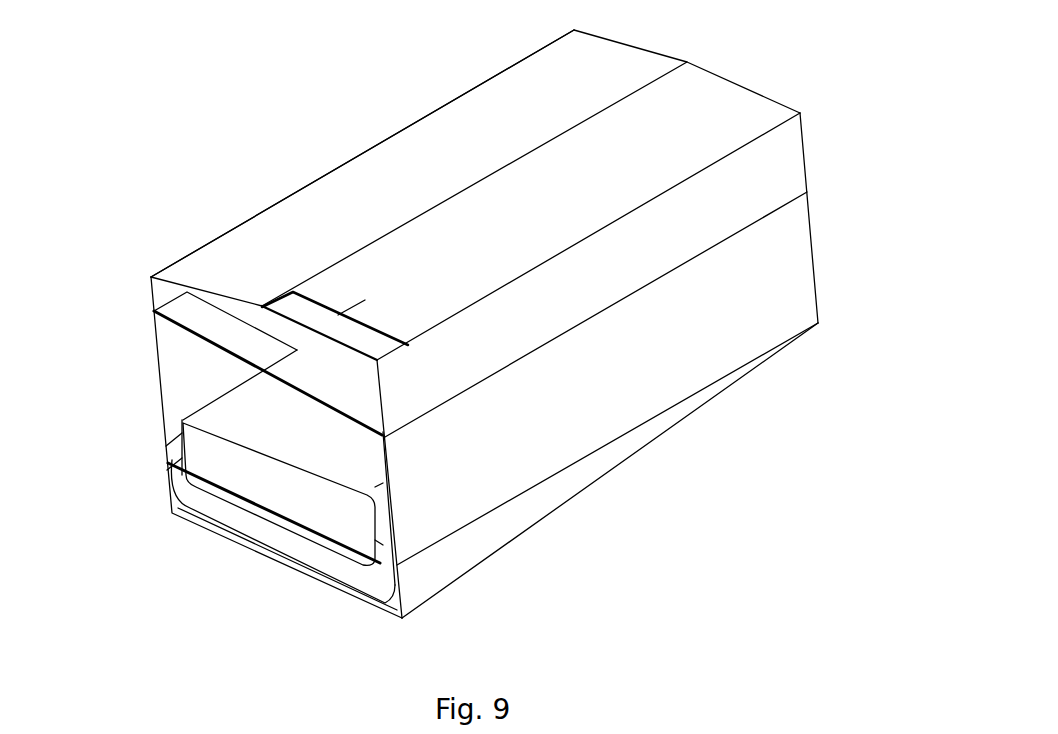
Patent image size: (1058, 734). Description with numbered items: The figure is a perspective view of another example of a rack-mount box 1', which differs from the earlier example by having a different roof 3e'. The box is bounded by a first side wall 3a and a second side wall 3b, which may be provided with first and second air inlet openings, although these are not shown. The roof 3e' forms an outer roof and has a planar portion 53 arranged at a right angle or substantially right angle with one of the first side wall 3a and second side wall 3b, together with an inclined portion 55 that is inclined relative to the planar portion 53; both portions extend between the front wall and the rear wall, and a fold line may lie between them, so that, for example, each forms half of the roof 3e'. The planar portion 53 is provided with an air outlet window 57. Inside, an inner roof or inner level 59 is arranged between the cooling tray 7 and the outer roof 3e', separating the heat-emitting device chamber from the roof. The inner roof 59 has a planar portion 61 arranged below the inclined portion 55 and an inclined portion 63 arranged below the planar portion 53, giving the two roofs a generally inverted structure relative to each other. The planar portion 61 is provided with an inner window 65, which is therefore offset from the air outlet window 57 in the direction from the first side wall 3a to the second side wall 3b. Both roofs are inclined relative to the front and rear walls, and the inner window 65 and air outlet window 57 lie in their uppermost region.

The rack-mount box 1' is at (527, 324).
The first side wall 3a is at (782, 267).
The second side wall 3b is at (158, 375).
The roof 3e' is at (362, 153).
The planar portion 53 is at (710, 95).
The inclined portion 55 is at (265, 240).
The air outlet window 57 is at (376, 336).
The inner roof 59 is at (312, 406).
The planar portion 61 is at (290, 330).
The inclined portion 63 is at (360, 400).
The inner window 65 is at (208, 320).
The cooling tray 7 is at (272, 532).